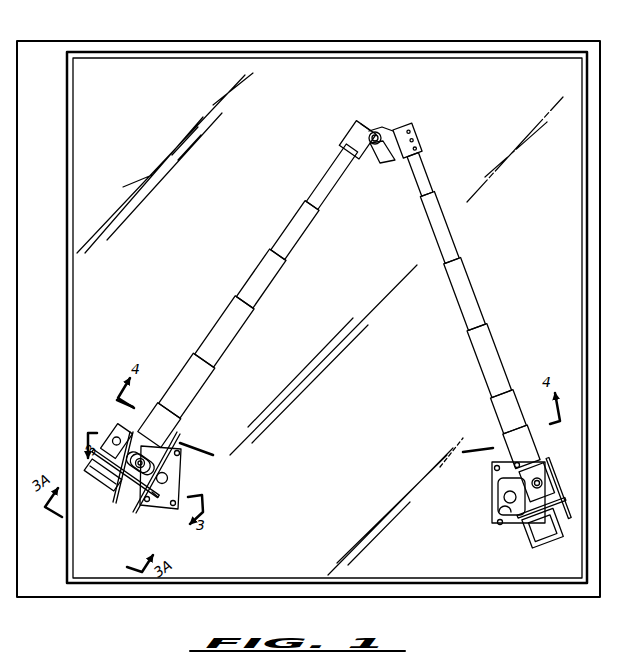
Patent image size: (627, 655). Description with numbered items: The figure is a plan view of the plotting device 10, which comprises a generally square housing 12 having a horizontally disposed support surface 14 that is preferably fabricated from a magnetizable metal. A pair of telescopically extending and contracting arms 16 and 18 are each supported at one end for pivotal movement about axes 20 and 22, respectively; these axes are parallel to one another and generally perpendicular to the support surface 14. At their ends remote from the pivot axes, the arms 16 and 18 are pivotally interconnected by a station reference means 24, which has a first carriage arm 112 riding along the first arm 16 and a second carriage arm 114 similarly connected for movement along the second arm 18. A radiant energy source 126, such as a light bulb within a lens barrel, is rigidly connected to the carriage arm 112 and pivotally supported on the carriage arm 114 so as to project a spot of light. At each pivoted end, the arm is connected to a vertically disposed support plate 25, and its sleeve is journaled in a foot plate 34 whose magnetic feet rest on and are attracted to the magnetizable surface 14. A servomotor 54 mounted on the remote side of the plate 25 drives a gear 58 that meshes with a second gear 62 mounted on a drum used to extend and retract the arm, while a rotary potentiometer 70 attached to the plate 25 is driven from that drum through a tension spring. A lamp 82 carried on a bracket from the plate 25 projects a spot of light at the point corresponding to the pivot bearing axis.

The plotting device 10 is at (107, 40).
The housing 12 is at (262, 38).
The support surface 14 is at (338, 532).
The telescopically extending and contracting arm 16 is at (242, 333).
The telescopically extending and contracting arm 18 is at (470, 351).
The pivot axis 20 is at (168, 480).
The pivot axis 22 is at (504, 497).
The station reference means 24 is at (384, 121).
The vertically disposed support plate 25 is at (158, 498).
The foot plate 34 is at (181, 463).
The servomotor 54 is at (527, 527).
The gear 58 is at (563, 518).
The second gear 62 is at (125, 507).
The rotary potentiometer 70 is at (100, 481).
The lamp 82 is at (142, 456).
The first carriage arm 112 is at (347, 132).
The second carriage arm 114 is at (418, 140).
The radiant energy source 126 is at (377, 150).